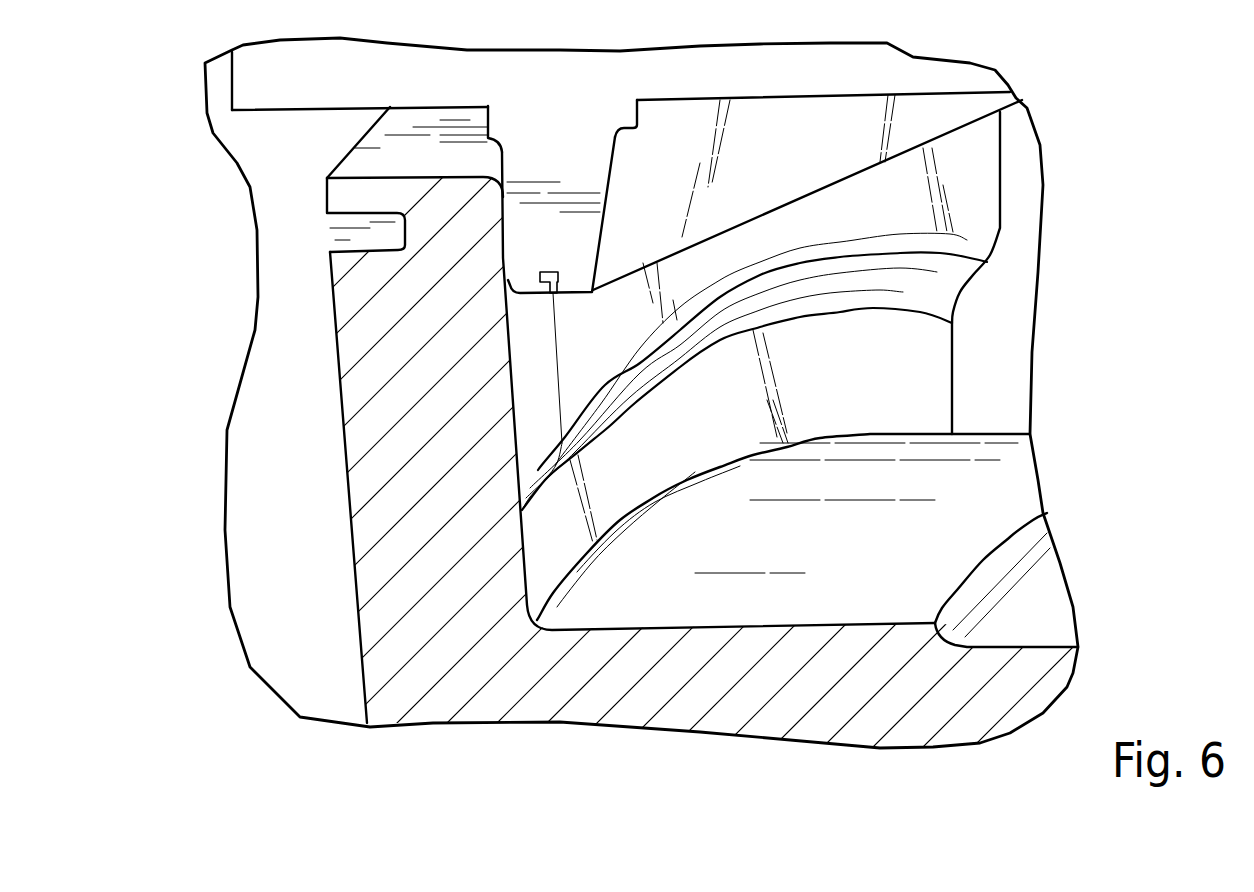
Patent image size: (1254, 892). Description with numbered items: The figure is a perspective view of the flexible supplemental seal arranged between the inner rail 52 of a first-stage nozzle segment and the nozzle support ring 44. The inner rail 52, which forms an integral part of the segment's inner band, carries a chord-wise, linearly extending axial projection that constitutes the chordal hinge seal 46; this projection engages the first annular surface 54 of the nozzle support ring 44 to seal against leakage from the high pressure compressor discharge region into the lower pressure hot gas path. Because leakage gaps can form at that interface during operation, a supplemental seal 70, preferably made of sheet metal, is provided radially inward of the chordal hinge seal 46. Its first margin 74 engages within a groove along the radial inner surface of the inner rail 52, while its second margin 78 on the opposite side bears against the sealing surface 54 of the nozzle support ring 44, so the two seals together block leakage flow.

The nozzle support ring 44 is at (373, 410).
The chordal hinge seal 46 is at (530, 262).
The inner rail 52 is at (621, 94).
The first annular surface 54 is at (537, 530).
The supplemental seal 70 is at (828, 338).
The first margin 74 is at (560, 282).
The second margin 78 is at (643, 378).